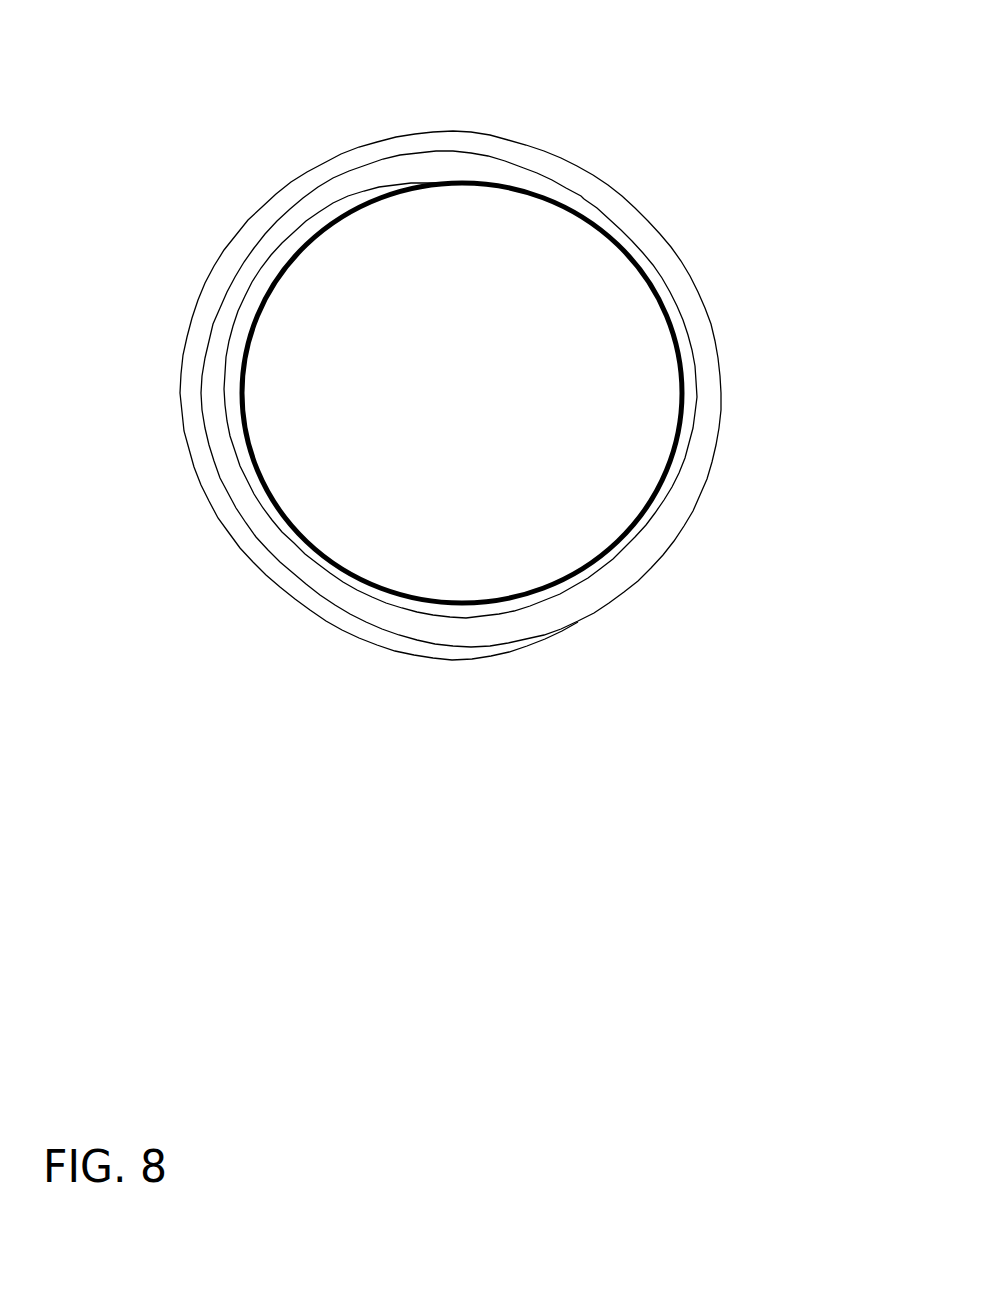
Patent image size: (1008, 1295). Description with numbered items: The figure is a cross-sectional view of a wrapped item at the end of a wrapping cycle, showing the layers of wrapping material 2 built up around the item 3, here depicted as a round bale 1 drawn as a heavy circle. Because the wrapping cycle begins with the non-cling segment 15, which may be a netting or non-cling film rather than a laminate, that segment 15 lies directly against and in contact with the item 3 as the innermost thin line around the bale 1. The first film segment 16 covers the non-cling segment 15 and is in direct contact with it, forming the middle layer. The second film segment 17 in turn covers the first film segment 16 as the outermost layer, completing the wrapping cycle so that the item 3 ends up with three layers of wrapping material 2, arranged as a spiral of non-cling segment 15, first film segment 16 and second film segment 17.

The bale 1 is at (580, 653).
The wrapping material 2 is at (388, 409).
The item 3 is at (560, 408).
The non-cling segment 15 is at (258, 293).
The first film segment 16 is at (308, 205).
The second film segment 17 is at (377, 152).